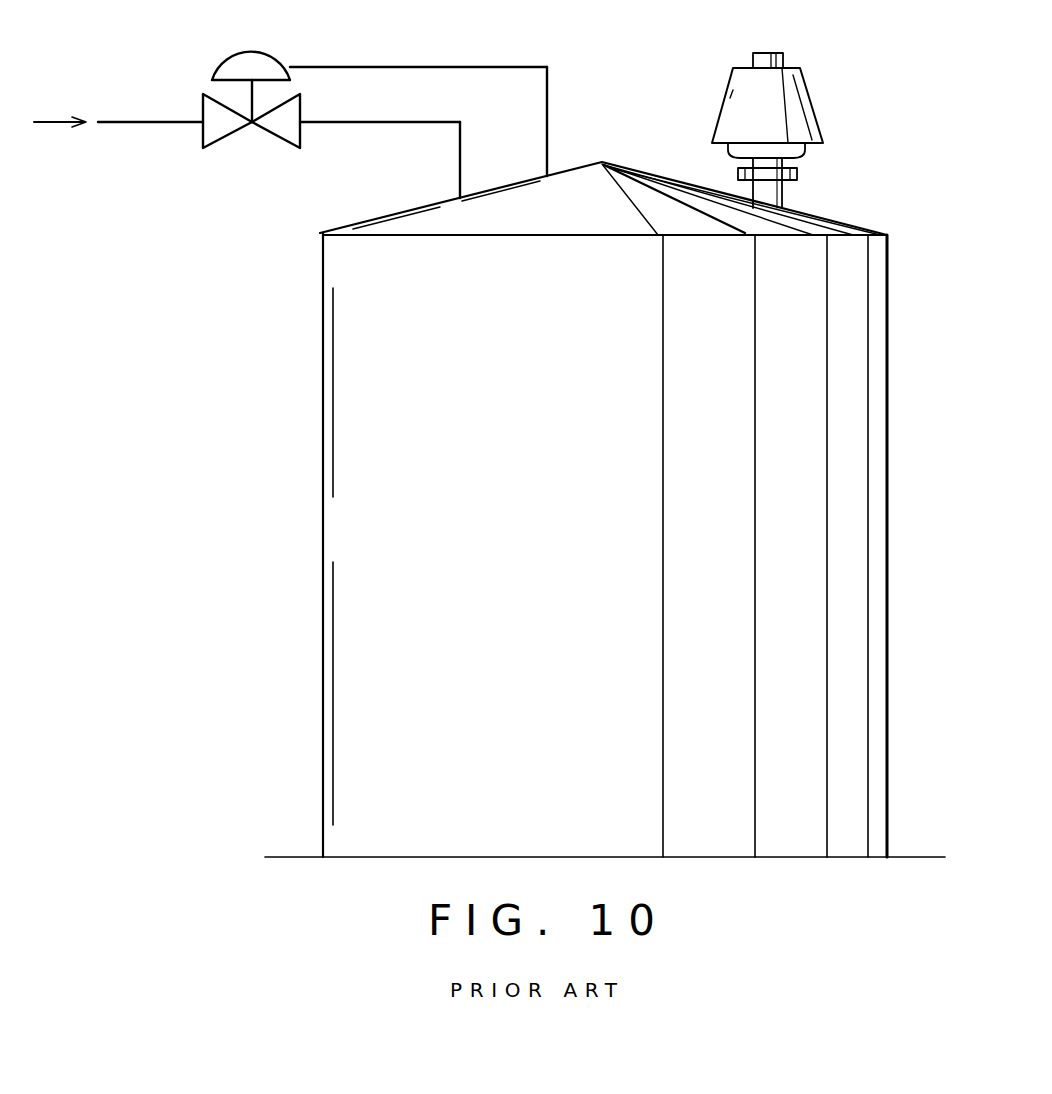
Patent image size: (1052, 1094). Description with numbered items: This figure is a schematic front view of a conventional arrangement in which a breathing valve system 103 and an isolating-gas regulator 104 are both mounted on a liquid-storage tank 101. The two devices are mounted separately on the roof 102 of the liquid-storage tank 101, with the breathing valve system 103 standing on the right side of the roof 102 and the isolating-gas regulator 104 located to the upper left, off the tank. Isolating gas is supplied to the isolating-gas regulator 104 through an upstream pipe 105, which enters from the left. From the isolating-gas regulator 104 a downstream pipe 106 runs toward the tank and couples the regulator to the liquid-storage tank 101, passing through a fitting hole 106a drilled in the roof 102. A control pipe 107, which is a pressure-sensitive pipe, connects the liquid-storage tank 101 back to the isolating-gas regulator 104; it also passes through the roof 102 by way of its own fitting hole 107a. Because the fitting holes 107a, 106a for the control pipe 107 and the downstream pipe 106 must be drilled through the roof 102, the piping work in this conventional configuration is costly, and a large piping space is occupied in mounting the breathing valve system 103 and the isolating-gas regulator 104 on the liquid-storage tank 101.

The liquid-storage tank 101 is at (322, 395).
The roof 102 is at (635, 170).
The breathing valve system 103 is at (803, 110).
The isolating-gas regulator 104 is at (253, 130).
The upstream pipe 105 is at (153, 122).
The downstream pipe 106 is at (408, 122).
The fitting hole 106a is at (458, 195).
The control pipe 107 is at (397, 67).
The fitting hole 107a is at (550, 172).